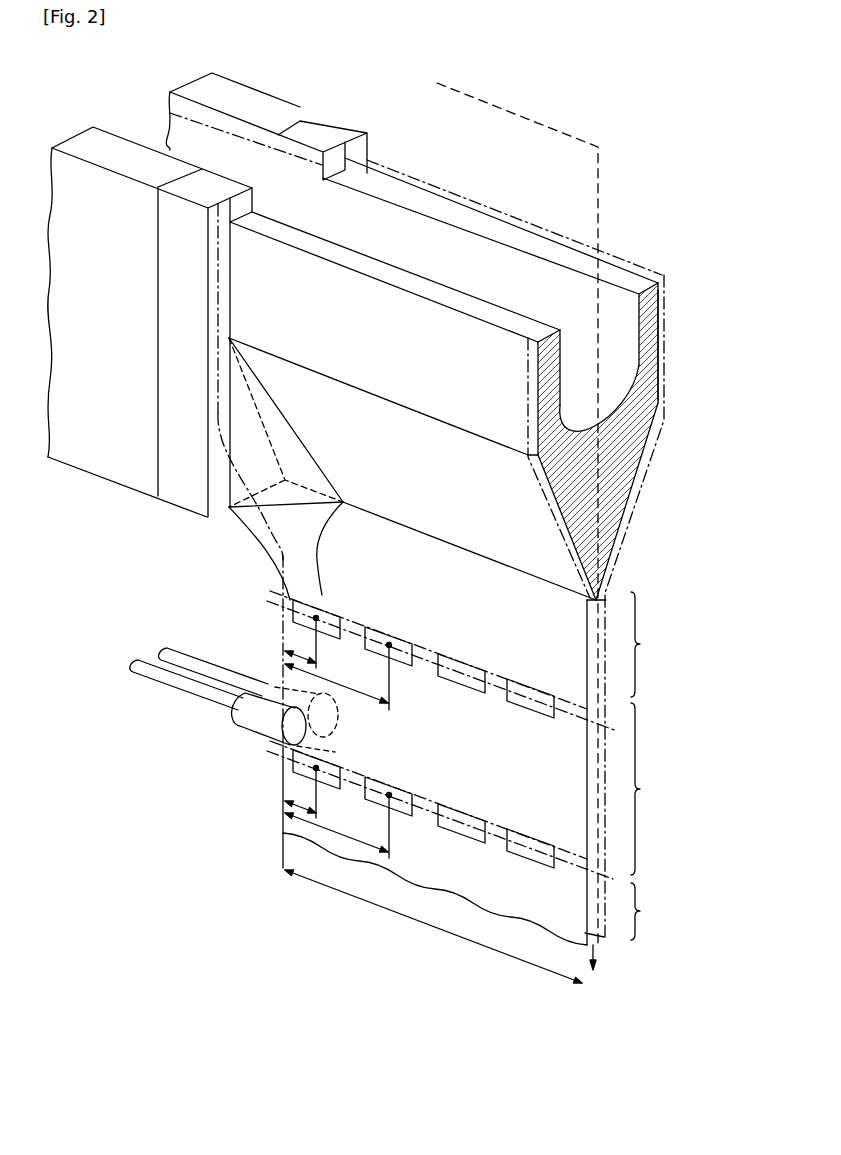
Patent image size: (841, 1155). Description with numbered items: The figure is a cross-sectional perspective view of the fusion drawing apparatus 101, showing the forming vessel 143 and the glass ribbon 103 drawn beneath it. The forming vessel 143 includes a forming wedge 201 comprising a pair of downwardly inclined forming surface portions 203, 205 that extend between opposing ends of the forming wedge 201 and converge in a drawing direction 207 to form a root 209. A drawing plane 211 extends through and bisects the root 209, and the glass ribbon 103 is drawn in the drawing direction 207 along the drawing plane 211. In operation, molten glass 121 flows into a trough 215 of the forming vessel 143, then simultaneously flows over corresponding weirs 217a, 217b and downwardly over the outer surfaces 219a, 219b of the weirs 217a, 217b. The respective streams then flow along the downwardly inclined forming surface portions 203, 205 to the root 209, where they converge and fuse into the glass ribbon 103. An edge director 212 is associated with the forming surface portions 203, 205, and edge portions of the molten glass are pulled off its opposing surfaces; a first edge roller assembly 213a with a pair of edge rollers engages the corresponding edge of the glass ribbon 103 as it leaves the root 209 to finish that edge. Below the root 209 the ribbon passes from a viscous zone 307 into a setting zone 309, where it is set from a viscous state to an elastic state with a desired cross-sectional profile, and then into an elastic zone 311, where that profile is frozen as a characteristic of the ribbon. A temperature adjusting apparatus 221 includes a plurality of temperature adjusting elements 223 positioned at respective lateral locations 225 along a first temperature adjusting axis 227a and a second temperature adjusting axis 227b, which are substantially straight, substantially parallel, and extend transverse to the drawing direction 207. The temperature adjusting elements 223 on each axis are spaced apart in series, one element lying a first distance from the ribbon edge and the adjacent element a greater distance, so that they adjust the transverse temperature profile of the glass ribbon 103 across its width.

The fusion drawing apparatus 101 is at (576, 107).
The glass ribbon 103 is at (548, 828).
The molten glass 121 is at (242, 132).
The forming vessel 143 is at (643, 225).
The forming wedge 201 is at (443, 187).
The downwardly inclined forming surface portion 203 is at (573, 558).
The downwardly inclined forming surface portion 205 is at (623, 537).
The drawing direction 207 is at (597, 947).
The root 209 is at (583, 598).
The drawing plane 211 is at (600, 165).
The edge director 212 is at (257, 542).
The first edge roller assembly 213a is at (348, 716).
The trough 215 is at (630, 357).
The weir 217a is at (410, 287).
The weir 217b is at (503, 233).
The outer surface 219a is at (539, 403).
The outer surface 219b is at (660, 320).
The temperature adjusting apparatus 221 is at (202, 622).
The temperature adjusting elements 223 is at (293, 612).
The lateral locations 225 is at (316, 618).
The first temperature adjusting axis 227a is at (617, 733).
The second temperature adjusting axis 227b is at (613, 879).
The viscous zone 307 is at (655, 644).
The setting zone 309 is at (655, 789).
The elastic zone 311 is at (655, 911).